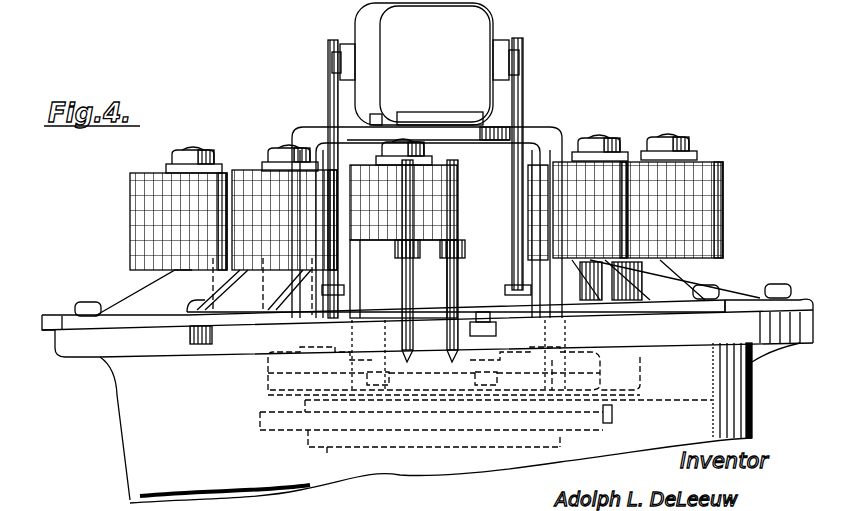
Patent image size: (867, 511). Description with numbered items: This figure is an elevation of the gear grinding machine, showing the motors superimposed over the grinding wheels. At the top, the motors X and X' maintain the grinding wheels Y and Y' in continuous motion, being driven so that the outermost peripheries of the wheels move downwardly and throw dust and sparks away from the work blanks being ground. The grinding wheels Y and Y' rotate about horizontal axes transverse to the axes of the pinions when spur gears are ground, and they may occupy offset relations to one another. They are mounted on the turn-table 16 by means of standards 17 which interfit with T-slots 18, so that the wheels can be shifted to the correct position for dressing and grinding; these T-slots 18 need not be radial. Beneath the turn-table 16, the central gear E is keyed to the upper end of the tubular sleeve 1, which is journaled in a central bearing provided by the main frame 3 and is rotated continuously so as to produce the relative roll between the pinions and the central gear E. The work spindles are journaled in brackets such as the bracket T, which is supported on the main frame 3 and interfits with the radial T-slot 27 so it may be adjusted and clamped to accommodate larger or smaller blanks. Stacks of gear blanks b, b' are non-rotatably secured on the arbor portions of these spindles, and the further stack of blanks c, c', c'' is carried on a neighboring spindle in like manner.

The motor X is at (442, 64).
The motor X' is at (405, 44).
The gear blank b is at (431, 153).
The gear blank b' is at (233, 159).
The coil c is at (411, 216).
The coil c' is at (115, 196).
The coil c'' is at (115, 208).
The bracket T is at (745, 268).
The grinding wheel Y is at (467, 261).
The grinding wheel Y' is at (393, 261).
The radial T-slot 27 is at (213, 336).
The standard 17 is at (336, 360).
The T-slot 18 is at (389, 378).
The turn-table 16 is at (602, 373).
The central gear E is at (612, 407).
The tubular sleeve 1 is at (560, 437).
The main frame 3 is at (752, 400).